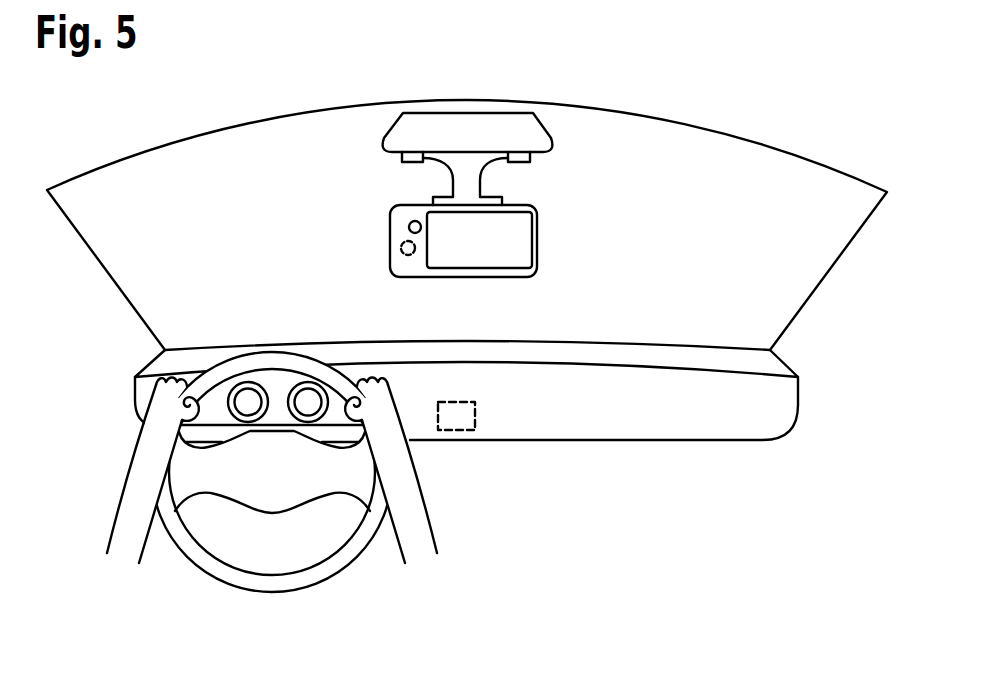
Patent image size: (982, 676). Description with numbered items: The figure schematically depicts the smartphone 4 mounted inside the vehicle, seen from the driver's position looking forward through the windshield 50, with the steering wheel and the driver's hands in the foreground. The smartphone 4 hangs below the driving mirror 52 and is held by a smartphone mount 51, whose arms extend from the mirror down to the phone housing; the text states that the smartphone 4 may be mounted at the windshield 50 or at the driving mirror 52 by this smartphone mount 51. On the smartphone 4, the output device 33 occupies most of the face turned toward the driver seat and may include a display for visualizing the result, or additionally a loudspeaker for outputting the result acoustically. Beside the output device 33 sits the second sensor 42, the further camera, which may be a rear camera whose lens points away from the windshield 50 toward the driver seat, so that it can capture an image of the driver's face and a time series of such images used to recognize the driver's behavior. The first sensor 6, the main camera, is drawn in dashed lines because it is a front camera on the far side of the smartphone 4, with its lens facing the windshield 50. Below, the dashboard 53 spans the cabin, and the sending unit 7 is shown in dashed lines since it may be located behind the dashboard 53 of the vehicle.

The windshield 50 is at (728, 150).
The smartphone mount 51 is at (470, 178).
The driving mirror 52 is at (523, 133).
The smartphone 4 is at (535, 260).
The output device 33 is at (515, 230).
The second sensor 42 is at (411, 223).
The first sensor 6 is at (401, 244).
The sending unit 7 is at (475, 408).
The dashboard 53 is at (582, 410).